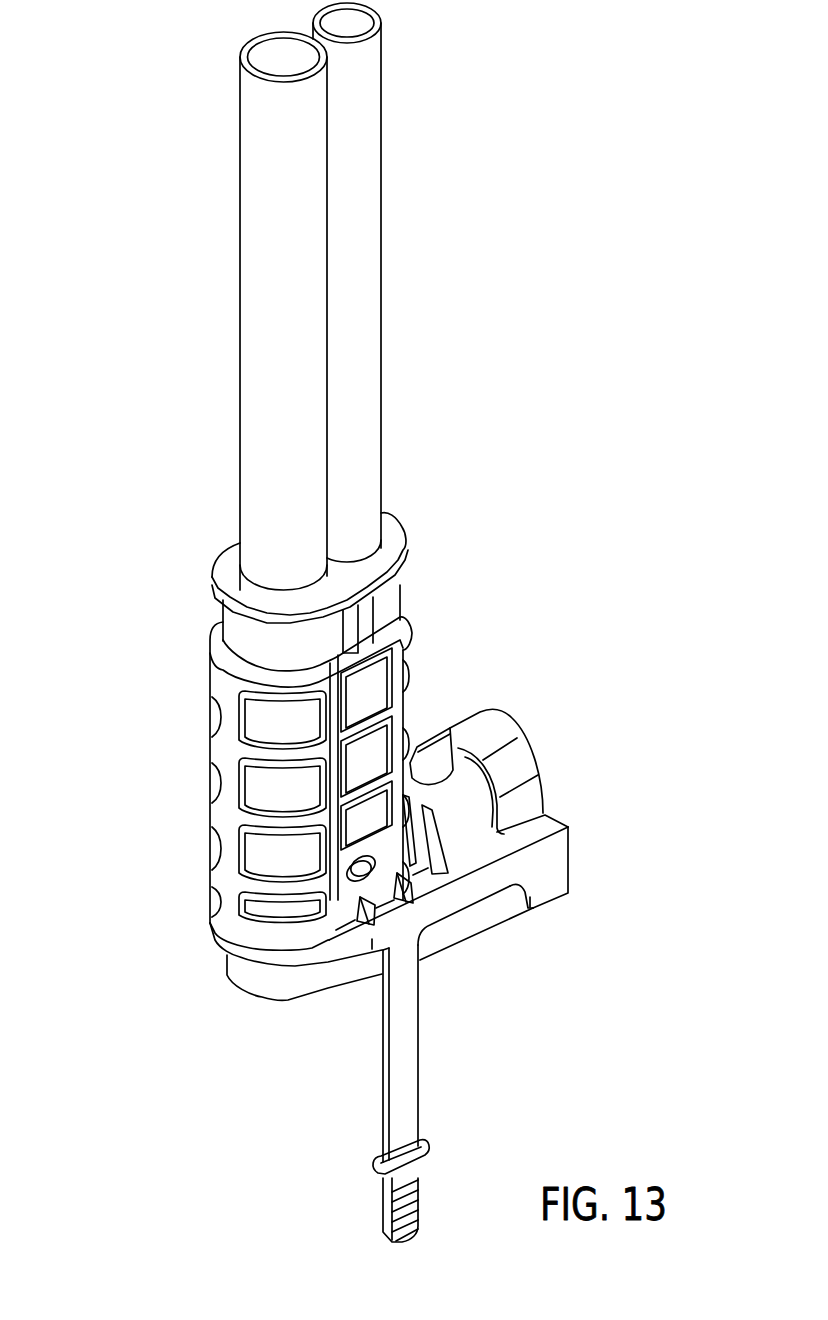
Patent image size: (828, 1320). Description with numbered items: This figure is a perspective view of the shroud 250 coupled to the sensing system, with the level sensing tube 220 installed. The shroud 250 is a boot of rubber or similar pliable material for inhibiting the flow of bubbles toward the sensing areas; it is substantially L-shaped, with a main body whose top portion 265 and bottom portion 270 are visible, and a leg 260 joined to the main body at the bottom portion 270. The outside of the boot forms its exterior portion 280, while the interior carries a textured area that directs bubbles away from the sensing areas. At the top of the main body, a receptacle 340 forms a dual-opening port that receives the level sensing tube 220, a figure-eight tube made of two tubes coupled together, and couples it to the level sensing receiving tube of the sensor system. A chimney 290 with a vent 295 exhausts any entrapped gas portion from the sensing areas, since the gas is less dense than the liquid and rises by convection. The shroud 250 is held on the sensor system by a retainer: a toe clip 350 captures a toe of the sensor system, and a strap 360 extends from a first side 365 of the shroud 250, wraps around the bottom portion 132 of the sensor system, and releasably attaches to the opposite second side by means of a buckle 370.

The level sensing tube 220 is at (378, 287).
The receptacle 340 is at (228, 560).
The top portion 265 is at (178, 652).
The shroud 250 is at (188, 803).
The exterior portion 280 is at (275, 862).
The bottom portion 270 is at (188, 958).
The bottom portion 132 is at (446, 963).
The leg 260 is at (558, 813).
The chimney 290 is at (472, 732).
The vent 295 is at (429, 730).
The toe clip 350 is at (558, 910).
The first side 365 is at (393, 920).
The strap 360 is at (420, 1053).
The buckle 370 is at (363, 1200).